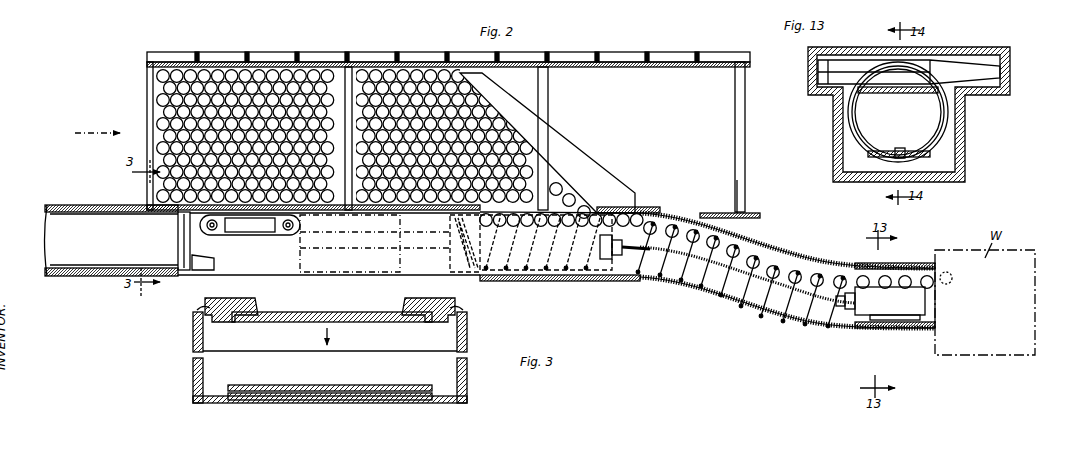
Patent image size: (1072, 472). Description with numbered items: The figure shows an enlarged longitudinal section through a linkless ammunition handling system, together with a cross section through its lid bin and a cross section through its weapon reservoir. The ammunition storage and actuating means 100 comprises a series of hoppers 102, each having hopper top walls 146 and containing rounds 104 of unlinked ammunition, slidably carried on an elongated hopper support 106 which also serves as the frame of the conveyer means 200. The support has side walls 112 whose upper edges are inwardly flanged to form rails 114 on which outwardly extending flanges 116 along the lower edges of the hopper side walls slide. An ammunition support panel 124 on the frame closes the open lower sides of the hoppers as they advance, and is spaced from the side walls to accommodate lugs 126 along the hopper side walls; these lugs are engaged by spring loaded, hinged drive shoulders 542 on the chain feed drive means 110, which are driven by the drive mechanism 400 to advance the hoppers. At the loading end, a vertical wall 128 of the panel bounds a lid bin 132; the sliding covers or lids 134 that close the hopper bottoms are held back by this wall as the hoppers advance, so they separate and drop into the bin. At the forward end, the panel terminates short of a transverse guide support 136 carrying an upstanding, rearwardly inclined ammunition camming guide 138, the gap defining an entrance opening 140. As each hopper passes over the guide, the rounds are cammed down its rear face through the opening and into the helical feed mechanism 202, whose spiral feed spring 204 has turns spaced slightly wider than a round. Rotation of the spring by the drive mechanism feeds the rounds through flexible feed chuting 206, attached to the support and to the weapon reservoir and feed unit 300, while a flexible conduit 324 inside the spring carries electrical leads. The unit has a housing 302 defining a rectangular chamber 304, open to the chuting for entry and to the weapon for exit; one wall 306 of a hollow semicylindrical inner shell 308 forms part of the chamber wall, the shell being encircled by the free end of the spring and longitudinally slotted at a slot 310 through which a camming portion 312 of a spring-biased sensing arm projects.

In FIG. 2, the ammunition storage and actuating means 100 is at (140, 63).
In FIG. 2, the hoppers 102 is at (236, 43).
In FIG. 2, the hopper top walls 146 is at (272, 62).
In FIG. 2, the rounds 104 is at (157, 100).
In FIG. 2, the ammunition camming guide 138 is at (556, 144).
In FIG. 2, the entrance opening 140 is at (580, 190).
In FIG. 2, the guide support 136 is at (642, 206).
In FIG. 2, the rails 114 is at (742, 212).
In FIG. 3, the rails 114 is at (200, 312).
In FIG. 2, the lid bin 132 is at (60, 216).
In FIG. 3, the lid bin 132 is at (195, 370).
In FIG. 2, the sliding covers or lids 134 is at (106, 207).
In FIG. 3, the sliding covers or lids 134 is at (258, 320).
In FIG. 2, the vertical wall 128 is at (178, 220).
In FIG. 2, the hopper support 106 is at (198, 270).
In FIG. 2, the lugs 126 is at (250, 225).
In FIG. 2, the chain feed drive means 110 is at (242, 235).
In FIG. 2, the drive shoulders 542 is at (262, 238).
In FIG. 2, the drive mechanism 400 is at (320, 268).
In FIG. 2, the ammunition support panel 124 is at (347, 216).
In FIG. 2, the conveyer means 200 is at (687, 292).
In FIG. 2, the helical feed mechanism 202 is at (742, 240).
In FIG. 2, the spiral feed spring 204 is at (760, 302).
In FIG. 13, the spiral feed spring 204 is at (850, 150).
In FIG. 2, the flexible feed chuting 206 is at (784, 258).
In FIG. 2, the flexible conduit 324 is at (790, 306).
In FIG. 2, the housing 302 is at (872, 262).
In FIG. 13, the housing 302 is at (968, 122).
In FIG. 2, the rectangular chamber 304 is at (905, 262).
In FIG. 13, the rectangular chamber 304 is at (992, 64).
In FIG. 2, the weapon reservoir and feed unit 300 is at (892, 330).
In FIG. 13, the weapon reservoir and feed unit 300 is at (968, 160).
In FIG. 13, the inner shell 308 is at (942, 140).
In FIG. 13, the wall of inner shell 306 is at (872, 93).
In FIG. 13, the camming portion 312 is at (900, 150).
In FIG. 13, the slot 310 is at (915, 157).
In FIG. 3, the side walls 112 is at (193, 340).
In FIG. 3, the flanges 116 is at (205, 303).